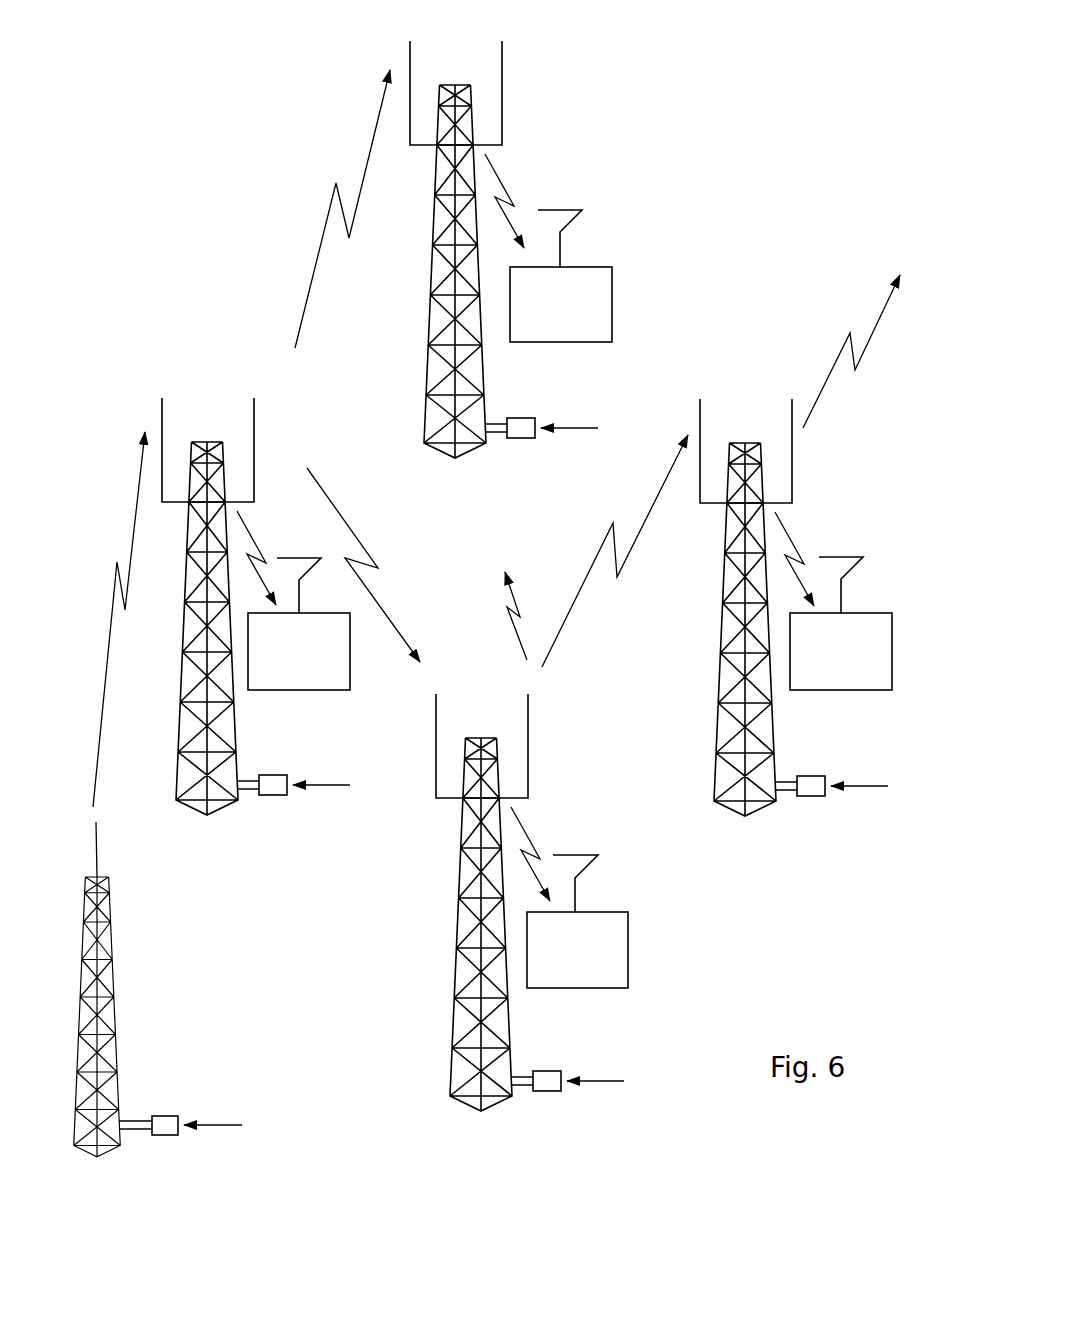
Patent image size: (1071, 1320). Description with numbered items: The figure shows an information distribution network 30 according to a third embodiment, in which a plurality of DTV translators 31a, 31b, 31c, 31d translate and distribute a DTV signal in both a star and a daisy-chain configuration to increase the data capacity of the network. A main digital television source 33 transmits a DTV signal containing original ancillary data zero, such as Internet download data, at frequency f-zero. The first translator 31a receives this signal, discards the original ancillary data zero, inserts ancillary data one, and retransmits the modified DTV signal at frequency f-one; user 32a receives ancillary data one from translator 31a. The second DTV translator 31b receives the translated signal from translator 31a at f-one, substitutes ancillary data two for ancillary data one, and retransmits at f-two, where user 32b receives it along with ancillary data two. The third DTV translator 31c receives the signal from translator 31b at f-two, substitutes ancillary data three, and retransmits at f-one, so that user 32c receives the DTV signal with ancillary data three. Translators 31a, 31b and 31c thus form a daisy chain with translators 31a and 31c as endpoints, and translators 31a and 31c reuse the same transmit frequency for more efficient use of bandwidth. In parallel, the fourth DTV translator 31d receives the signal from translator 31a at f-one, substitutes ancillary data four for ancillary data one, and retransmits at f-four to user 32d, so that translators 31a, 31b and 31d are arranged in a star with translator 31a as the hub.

The information distribution network 30 is at (808, 57).
The first translator 31a is at (256, 803).
The second DTV translator 31b is at (526, 1096).
The third DTV translator 31c is at (789, 806).
The fourth DTV translator 31d is at (498, 441).
The user 32a is at (302, 624).
The user 32b is at (583, 921).
The user 32c is at (841, 623).
The user 32d is at (563, 276).
The main digital television source transmitter 33 is at (139, 1017).